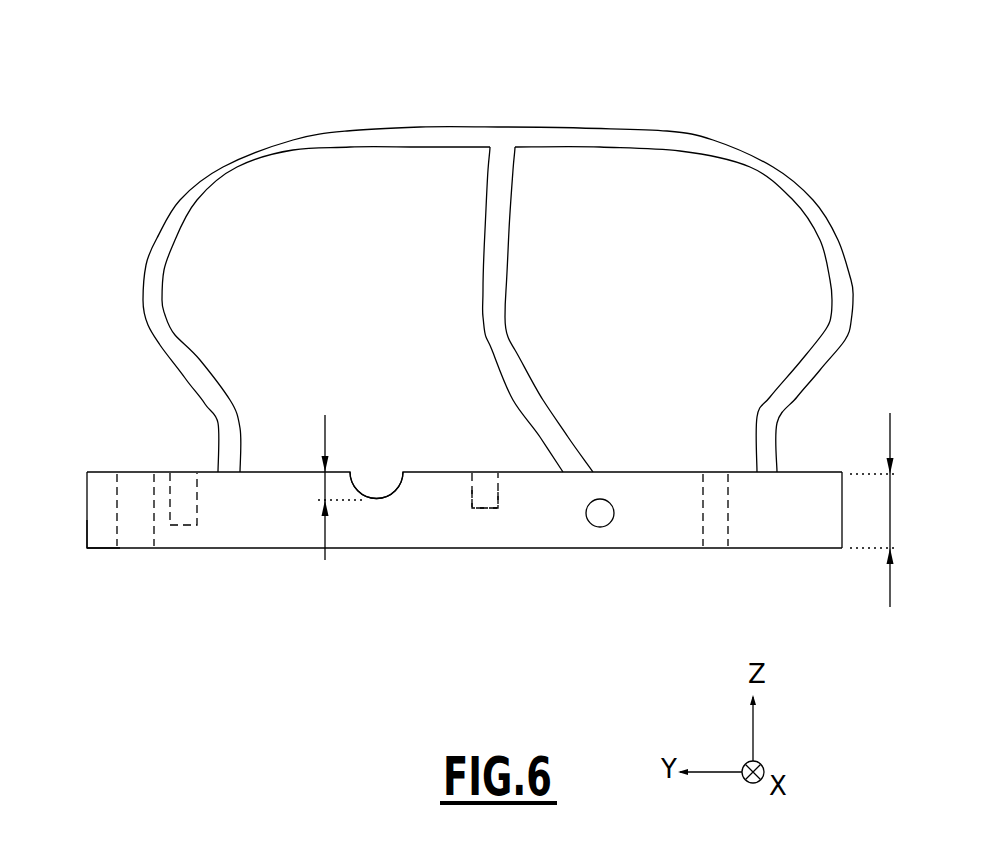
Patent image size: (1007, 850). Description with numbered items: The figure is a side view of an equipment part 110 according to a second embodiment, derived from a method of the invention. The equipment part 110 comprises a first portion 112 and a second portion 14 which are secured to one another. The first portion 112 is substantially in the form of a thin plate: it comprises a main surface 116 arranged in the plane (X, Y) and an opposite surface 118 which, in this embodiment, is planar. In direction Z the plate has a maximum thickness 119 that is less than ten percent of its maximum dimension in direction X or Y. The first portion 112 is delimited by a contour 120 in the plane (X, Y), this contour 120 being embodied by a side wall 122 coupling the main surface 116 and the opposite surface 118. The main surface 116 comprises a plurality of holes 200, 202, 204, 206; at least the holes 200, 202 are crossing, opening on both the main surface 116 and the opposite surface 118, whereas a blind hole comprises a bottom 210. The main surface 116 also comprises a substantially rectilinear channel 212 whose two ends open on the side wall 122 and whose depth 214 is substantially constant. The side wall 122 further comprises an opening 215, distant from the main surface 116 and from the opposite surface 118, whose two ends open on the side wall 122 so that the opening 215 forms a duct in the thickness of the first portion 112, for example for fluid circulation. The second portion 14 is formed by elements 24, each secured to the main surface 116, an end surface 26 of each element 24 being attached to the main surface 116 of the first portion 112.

The second portion 14 is at (501, 244).
The element 24 is at (170, 223).
The end surface 26 is at (783, 468).
The equipment part 110 is at (488, 386).
The first portion 112 is at (488, 516).
The main surface 116 is at (667, 473).
The opposite surface 118 is at (497, 549).
The maximum thickness 119 is at (899, 510).
The contour 120 is at (79, 546).
The side wall 122 is at (87, 495).
The hole 200 is at (135, 570).
The hole 202 is at (712, 568).
The hole 204 is at (180, 462).
The hole 206 is at (477, 460).
The bottom 210 is at (482, 507).
The channel 212 is at (372, 450).
The depth 214 is at (314, 487).
The opening 215 is at (599, 513).